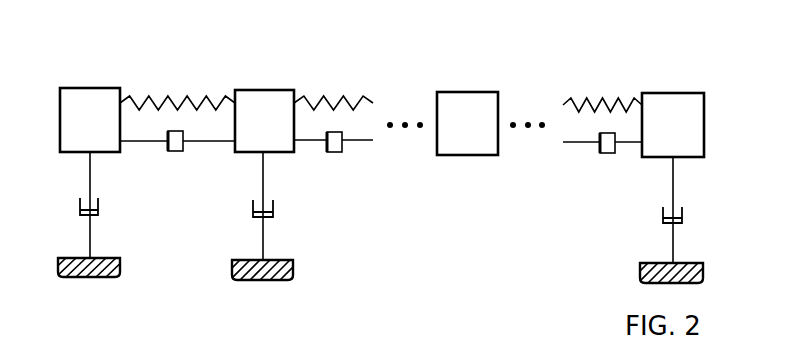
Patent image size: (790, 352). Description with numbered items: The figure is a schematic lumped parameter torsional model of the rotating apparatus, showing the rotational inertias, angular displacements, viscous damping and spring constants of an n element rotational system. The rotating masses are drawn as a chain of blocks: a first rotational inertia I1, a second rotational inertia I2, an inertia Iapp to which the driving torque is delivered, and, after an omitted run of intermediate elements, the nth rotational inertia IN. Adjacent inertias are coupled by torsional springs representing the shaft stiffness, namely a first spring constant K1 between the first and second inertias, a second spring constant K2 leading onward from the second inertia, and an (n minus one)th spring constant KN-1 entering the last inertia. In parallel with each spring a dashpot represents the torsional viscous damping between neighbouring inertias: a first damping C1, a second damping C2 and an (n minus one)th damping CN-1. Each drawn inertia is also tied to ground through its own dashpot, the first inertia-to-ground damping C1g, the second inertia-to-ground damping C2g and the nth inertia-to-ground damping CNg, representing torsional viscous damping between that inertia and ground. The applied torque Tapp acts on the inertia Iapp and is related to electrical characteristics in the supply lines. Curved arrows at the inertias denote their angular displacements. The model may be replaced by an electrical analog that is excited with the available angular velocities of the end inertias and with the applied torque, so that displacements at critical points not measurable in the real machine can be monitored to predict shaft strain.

The first rotational inertia I1 is at (79, 108).
The second rotational inertia I2 is at (249, 108).
The inertia receiving applied torque Iapp is at (444, 112).
The nth rotational inertia IN is at (656, 114).
The first spring constant K1 is at (168, 93).
The second spring constant K2 is at (321, 94).
The (n-1)th spring constant KN-1 is at (604, 97).
The first torsional viscous damping C1 is at (168, 151).
The second torsional viscous damping C2 is at (339, 152).
The (n-1)th torsional viscous damping CN-1 is at (601, 153).
The first inertia-to-ground damping C1g is at (98, 208).
The second inertia-to-ground damping C2g is at (273, 209).
The nth inertia-to-ground damping CNg is at (682, 215).
The applied torque Tapp is at (517, 52).